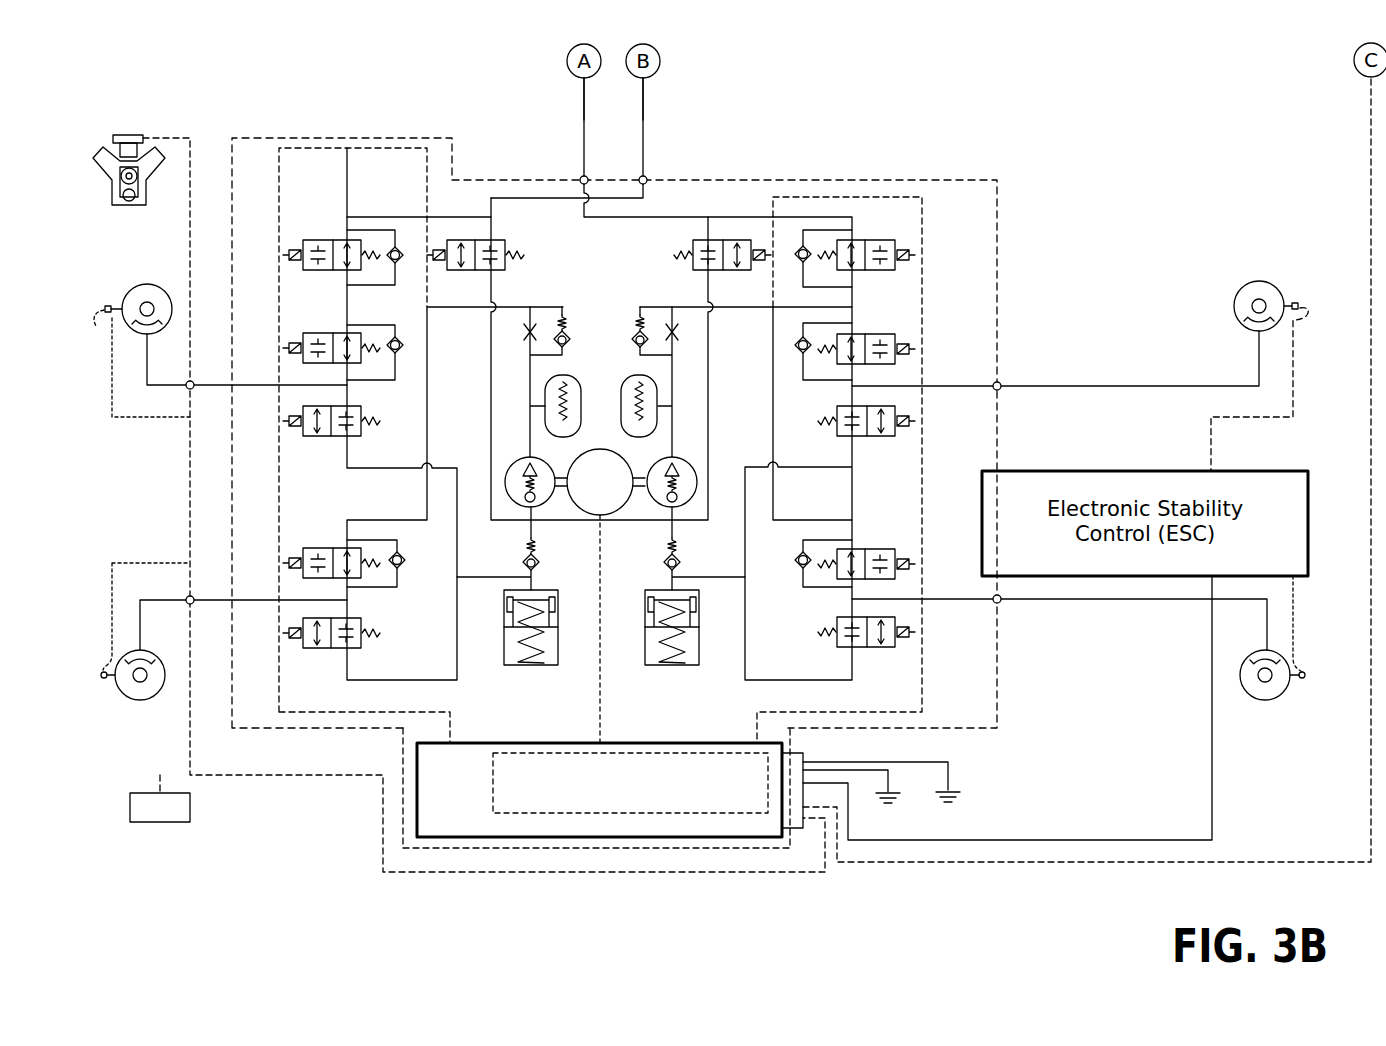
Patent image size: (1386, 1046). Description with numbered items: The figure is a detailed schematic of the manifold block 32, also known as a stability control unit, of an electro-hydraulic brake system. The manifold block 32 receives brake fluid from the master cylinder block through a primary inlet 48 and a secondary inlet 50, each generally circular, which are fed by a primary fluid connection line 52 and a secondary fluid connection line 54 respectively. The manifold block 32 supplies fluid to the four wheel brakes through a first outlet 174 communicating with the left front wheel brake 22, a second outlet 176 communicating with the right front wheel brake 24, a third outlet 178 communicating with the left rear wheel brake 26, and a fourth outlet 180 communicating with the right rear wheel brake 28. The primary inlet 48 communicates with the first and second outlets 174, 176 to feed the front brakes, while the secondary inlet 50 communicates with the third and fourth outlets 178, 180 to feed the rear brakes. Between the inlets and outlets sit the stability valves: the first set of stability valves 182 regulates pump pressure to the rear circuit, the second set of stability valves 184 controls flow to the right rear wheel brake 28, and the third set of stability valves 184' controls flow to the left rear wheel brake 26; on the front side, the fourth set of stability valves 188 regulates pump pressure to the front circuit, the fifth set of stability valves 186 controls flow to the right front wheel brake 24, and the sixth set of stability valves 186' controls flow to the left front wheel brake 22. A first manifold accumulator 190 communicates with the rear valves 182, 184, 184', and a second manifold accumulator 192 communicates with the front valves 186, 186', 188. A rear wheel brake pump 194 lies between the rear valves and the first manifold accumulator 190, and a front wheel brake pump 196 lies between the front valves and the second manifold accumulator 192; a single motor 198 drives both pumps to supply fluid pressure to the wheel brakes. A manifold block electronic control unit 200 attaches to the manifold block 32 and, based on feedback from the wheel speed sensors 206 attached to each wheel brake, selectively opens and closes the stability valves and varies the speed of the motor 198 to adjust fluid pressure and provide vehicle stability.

The manifold block 32 is at (223, 138).
The left front wheel brake 22 is at (126, 653).
The right front wheel brake 24 is at (130, 288).
The left rear wheel brake 26 is at (1247, 693).
The right rear wheel brake 28 is at (1234, 300).
The primary inlet 48 is at (647, 183).
The secondary inlet 50 is at (582, 176).
The primary fluid connection line 52 is at (645, 125).
The secondary fluid connection line 54 is at (584, 85).
The first outlet 174 is at (190, 597).
The second outlet 176 is at (190, 389).
The third outlet 178 is at (1000, 603).
The fourth outlet 180 is at (1000, 391).
The first set of stability valves 182 is at (900, 245).
The second set of stability valves 184 is at (888, 388).
The third set of stability valves 184' is at (892, 593).
The fifth set of stability valves 186 is at (343, 388).
The sixth set of stability valves 186' is at (342, 577).
The fourth set of stability valves 188 is at (318, 240).
The first manifold accumulator 190 is at (672, 667).
The second manifold accumulator 192 is at (531, 667).
The rear wheel brake pump 194 is at (688, 470).
The front wheel brake pump 196 is at (512, 470).
The motor 198 is at (600, 449).
The manifold block electronic control unit 200 is at (505, 828).
The wheel speed sensor 206 is at (104, 314).